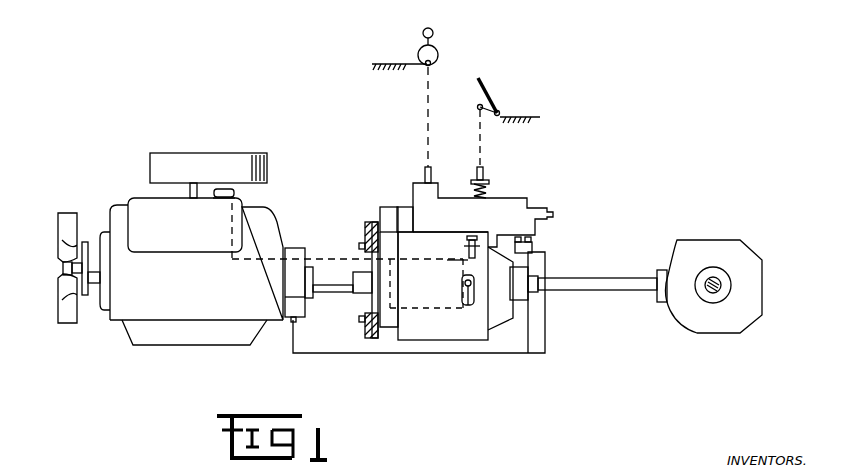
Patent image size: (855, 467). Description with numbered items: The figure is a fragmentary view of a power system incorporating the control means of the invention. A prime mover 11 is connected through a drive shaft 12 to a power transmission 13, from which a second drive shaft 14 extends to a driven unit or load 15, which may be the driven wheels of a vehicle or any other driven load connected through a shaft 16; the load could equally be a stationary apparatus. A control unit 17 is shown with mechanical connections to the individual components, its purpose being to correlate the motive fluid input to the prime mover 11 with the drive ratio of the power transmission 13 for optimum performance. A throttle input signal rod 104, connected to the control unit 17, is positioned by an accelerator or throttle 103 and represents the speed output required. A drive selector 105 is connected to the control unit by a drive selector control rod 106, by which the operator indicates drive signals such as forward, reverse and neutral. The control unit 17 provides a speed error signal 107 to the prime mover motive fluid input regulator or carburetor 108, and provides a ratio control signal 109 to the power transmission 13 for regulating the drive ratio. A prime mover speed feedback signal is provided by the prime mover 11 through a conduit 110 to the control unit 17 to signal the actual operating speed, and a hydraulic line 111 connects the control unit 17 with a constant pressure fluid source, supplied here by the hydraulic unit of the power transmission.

The prime mover 11 is at (205, 299).
The drive shaft 12 is at (333, 293).
The power transmission 13 is at (445, 296).
The second drive shaft 14 is at (615, 285).
The driven unit or load 15 is at (712, 241).
The shaft 16 is at (703, 291).
The control unit 17 is at (508, 205).
The accelerator or throttle 103 is at (490, 92).
The throttle input signal rod 104 is at (483, 146).
The drive selector 105 is at (440, 52).
The drive selector control rod 106 is at (427, 133).
The speed error signal 107 is at (327, 260).
The carburetor 108 is at (268, 172).
The ratio control signal 109 is at (394, 217).
The conduit 110 is at (546, 330).
The hydraulic line 111 is at (531, 246).